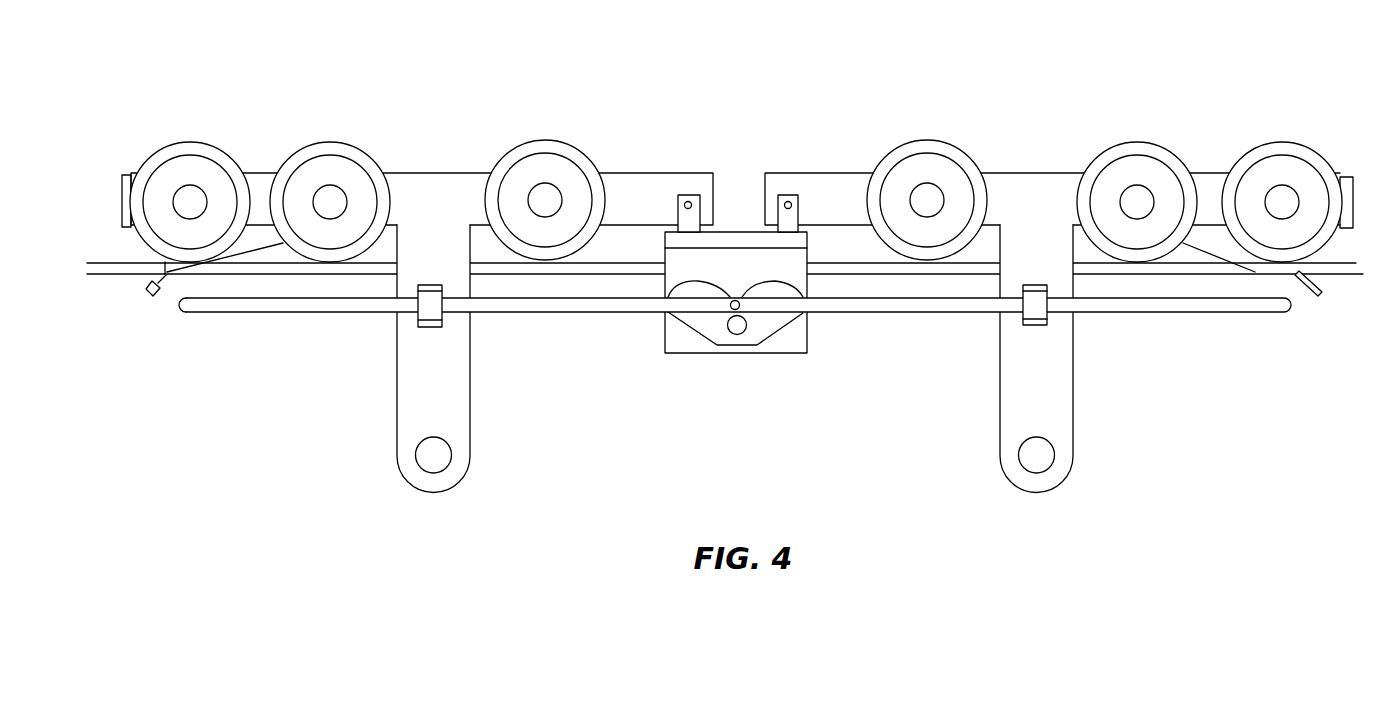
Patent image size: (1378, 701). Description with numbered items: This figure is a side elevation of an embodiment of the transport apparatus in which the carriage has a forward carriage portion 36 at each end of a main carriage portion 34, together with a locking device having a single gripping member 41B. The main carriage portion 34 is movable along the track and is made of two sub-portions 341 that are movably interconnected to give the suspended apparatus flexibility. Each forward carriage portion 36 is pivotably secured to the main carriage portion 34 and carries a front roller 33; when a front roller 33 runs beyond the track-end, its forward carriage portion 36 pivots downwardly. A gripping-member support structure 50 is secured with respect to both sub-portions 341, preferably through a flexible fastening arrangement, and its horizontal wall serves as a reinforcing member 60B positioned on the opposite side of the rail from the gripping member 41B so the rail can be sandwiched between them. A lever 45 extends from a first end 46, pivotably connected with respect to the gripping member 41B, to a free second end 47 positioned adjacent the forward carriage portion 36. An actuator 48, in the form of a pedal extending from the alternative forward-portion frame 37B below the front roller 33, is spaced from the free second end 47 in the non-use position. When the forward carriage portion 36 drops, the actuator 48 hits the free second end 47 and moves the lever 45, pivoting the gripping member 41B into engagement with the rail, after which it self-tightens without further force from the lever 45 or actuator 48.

The front roller 33 is at (198, 150).
The forward carriage portion 36 is at (258, 190).
The main carriage portion 34 is at (435, 190).
The sub-portion 341 is at (638, 188).
The reinforcing member 60B is at (728, 238).
The forward-portion frame 37B is at (253, 238).
The actuator 48 is at (158, 283).
The free second end 47 is at (187, 310).
The lever 45 is at (520, 303).
The first end 46 is at (720, 307).
The gripping-member support structure 50 is at (736, 275).
The gripping member 41B is at (762, 322).